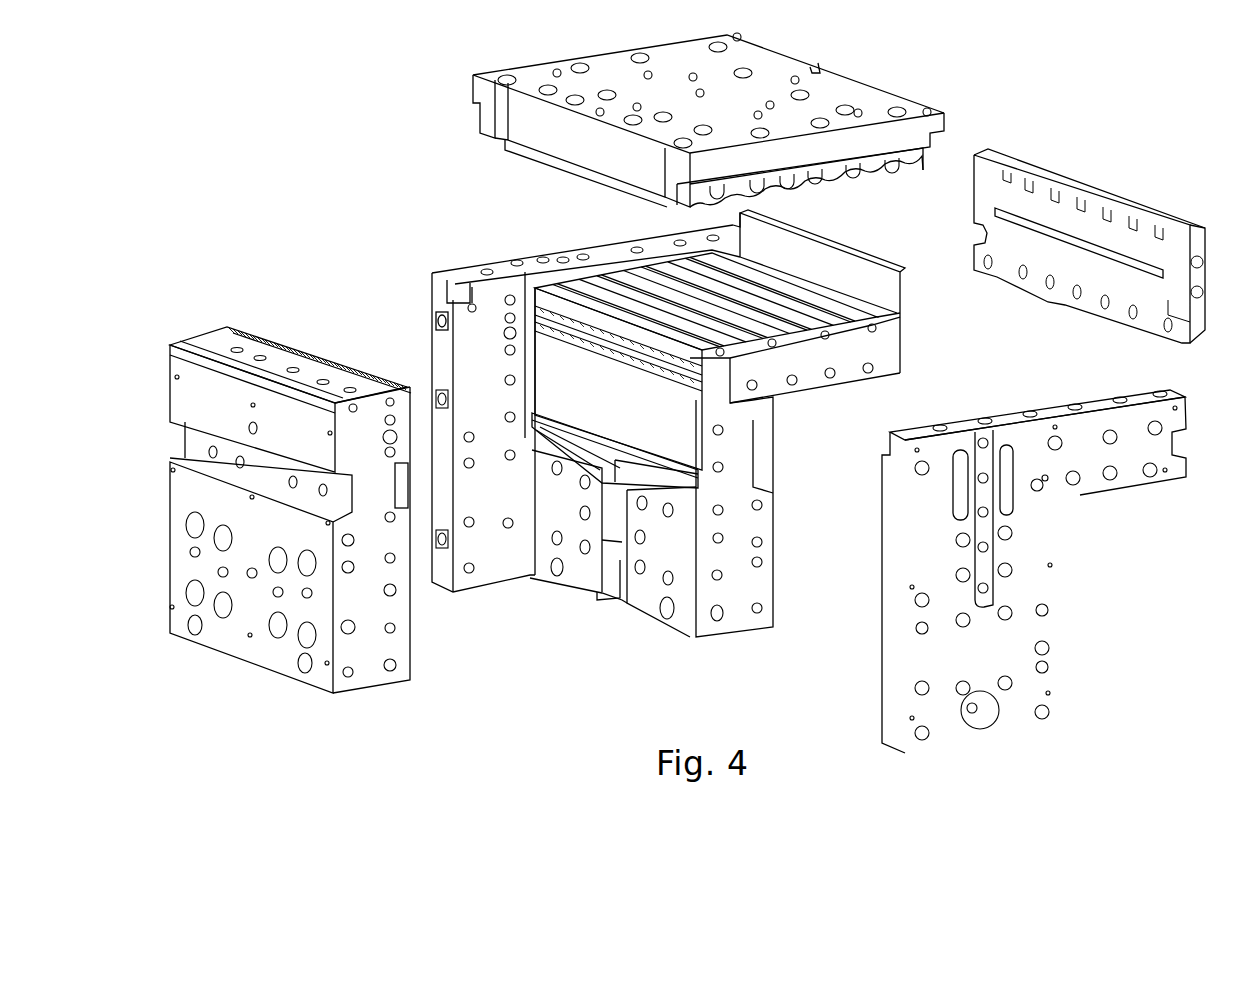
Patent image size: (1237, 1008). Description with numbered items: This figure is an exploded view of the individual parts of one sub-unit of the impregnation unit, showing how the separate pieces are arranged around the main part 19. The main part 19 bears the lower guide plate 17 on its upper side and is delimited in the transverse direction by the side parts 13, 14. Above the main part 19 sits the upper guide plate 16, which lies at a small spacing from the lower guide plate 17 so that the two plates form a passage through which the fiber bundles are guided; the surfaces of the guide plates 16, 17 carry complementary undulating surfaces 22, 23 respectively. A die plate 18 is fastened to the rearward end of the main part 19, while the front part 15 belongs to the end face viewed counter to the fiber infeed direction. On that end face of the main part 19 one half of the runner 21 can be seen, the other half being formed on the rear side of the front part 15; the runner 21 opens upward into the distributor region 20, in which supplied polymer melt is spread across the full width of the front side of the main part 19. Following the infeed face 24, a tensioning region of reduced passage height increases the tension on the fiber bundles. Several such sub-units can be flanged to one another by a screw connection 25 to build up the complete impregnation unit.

The side part 13 is at (1097, 470).
The side part 14 is at (483, 280).
The front part 15 is at (213, 393).
The upper guide plate 16 is at (580, 93).
The lower guide plate 17 is at (850, 322).
The die plate 18 is at (1032, 195).
The main part 19 is at (727, 607).
The distributor region 20 is at (558, 422).
The runner 21 is at (617, 567).
The undulating surface 22 is at (622, 276).
The undulating surface 23 is at (855, 185).
The infeed face 24 is at (248, 332).
The screw connection 25 is at (440, 312).